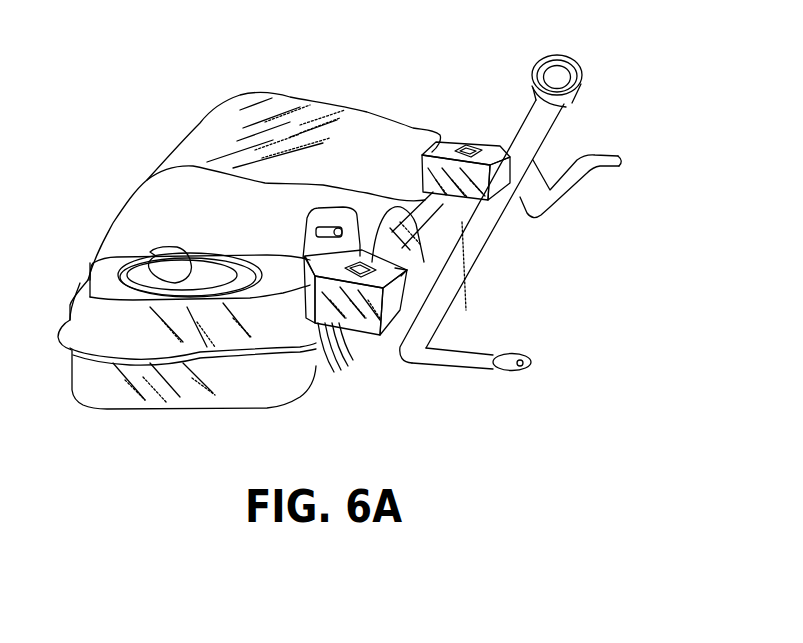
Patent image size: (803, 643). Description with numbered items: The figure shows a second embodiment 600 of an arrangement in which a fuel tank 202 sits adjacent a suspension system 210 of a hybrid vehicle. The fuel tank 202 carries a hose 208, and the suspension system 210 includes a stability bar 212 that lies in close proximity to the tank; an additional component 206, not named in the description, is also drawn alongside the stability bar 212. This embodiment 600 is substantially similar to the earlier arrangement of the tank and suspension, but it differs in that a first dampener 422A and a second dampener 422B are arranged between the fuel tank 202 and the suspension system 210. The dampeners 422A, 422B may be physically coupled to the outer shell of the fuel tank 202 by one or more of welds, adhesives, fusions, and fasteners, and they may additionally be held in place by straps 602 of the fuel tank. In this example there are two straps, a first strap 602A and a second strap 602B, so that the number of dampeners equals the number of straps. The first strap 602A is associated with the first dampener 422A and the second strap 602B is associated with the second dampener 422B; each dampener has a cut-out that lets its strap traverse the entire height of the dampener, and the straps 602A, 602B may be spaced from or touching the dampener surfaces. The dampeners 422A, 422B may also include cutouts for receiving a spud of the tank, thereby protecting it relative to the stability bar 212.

The second embodiment 600 is at (626, 28).
The fuel tank 202 is at (202, 143).
The support rod 206 is at (447, 258).
The hose 208 is at (418, 257).
The suspension system 210 is at (593, 199).
The stability bar 212 is at (490, 356).
The first dampener 422A is at (371, 326).
The second dampener 422B is at (450, 150).
The straps 602 is at (412, 273).
The first strap 602A is at (385, 266).
The second strap 602B is at (486, 149).